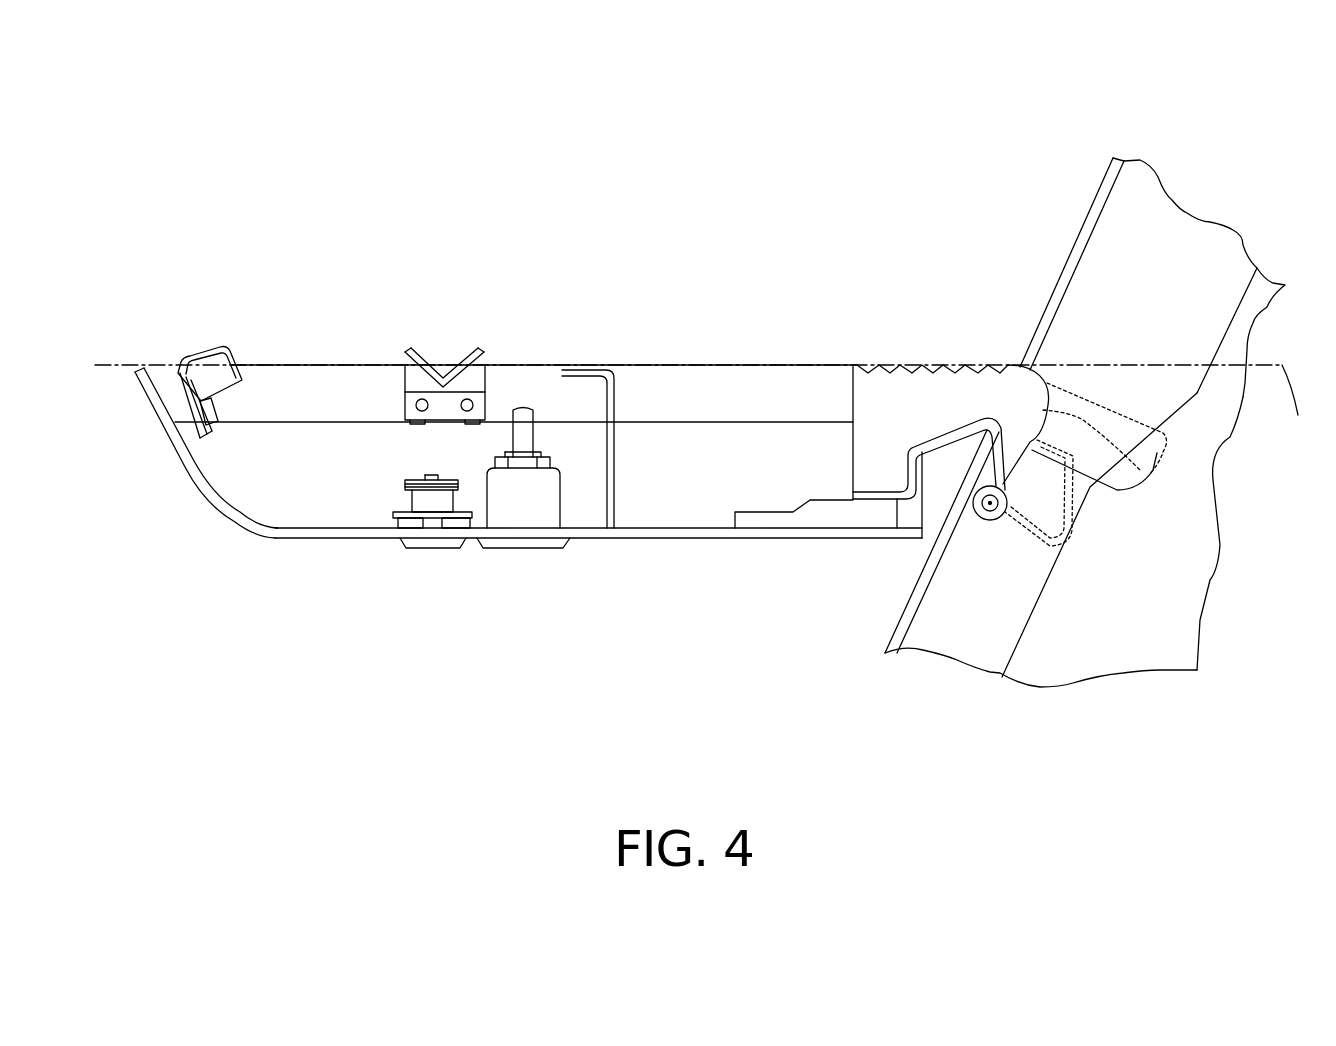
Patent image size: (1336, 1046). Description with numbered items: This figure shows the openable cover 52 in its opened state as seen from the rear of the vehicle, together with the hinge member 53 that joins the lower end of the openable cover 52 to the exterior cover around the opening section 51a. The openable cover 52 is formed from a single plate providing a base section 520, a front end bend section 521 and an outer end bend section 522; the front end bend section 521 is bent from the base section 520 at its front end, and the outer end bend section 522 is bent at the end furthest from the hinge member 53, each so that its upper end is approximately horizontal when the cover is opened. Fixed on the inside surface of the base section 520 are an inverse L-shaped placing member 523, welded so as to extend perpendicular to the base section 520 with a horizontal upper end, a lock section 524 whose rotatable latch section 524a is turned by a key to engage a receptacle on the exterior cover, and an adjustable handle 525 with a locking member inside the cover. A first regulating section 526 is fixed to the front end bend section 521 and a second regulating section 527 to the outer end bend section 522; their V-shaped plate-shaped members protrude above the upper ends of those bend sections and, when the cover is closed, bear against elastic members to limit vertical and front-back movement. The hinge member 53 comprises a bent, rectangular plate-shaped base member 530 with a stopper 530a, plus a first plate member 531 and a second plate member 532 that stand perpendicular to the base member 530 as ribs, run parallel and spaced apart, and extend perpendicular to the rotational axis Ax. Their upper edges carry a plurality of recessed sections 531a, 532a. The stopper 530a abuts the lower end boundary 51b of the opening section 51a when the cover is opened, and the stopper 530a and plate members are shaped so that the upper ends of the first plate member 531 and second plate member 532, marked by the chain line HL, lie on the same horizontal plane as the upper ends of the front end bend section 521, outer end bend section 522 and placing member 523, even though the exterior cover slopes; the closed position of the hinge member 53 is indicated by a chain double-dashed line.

The openable cover 52 is at (499, 452).
The base section 520 is at (587, 561).
The front end bend section 521 is at (665, 395).
The outer end bend section 522 is at (167, 437).
The placing member 523 is at (613, 463).
The lock section 524 is at (397, 578).
The latch section 524a is at (392, 498).
The adjustable handle 525 is at (535, 497).
The first regulating section 526 is at (440, 365).
The second regulating section 527 is at (207, 383).
The hinge member 53 is at (1065, 424).
The base member 530 is at (960, 437).
The stopper 530a is at (1150, 474).
The first plate member 531 is at (926, 297).
The second plate member 532 is at (926, 297).
The recessed sections 531a is at (929, 234).
The recessed sections 532a is at (945, 372).
The opening section 51a is at (1143, 233).
The lower end boundary 51b is at (950, 533).
The chain line HL is at (710, 407).
The rotational axis Ax is at (990, 515).